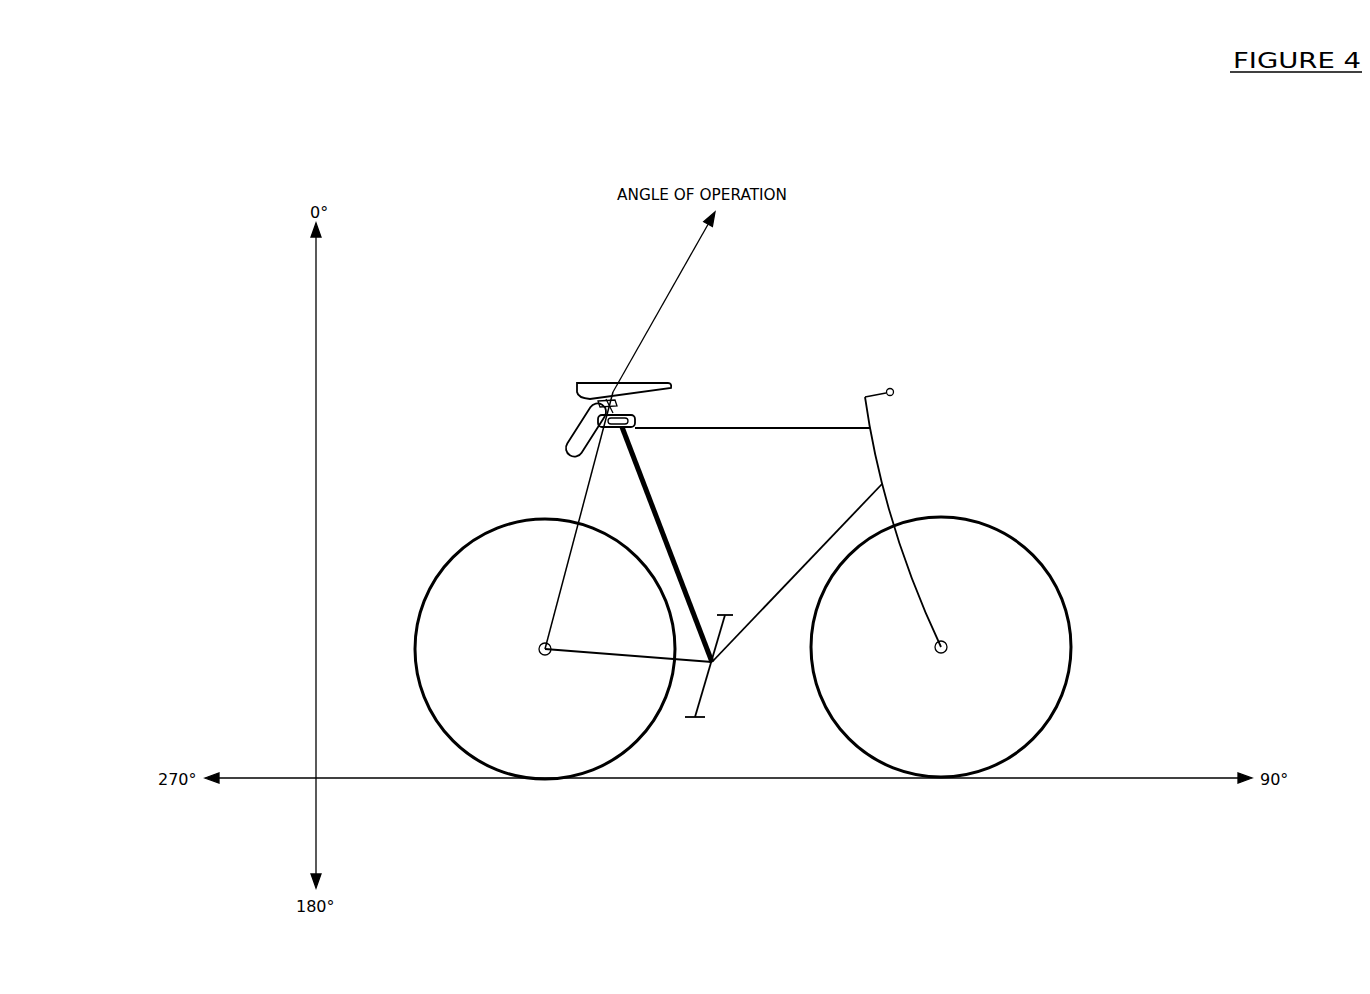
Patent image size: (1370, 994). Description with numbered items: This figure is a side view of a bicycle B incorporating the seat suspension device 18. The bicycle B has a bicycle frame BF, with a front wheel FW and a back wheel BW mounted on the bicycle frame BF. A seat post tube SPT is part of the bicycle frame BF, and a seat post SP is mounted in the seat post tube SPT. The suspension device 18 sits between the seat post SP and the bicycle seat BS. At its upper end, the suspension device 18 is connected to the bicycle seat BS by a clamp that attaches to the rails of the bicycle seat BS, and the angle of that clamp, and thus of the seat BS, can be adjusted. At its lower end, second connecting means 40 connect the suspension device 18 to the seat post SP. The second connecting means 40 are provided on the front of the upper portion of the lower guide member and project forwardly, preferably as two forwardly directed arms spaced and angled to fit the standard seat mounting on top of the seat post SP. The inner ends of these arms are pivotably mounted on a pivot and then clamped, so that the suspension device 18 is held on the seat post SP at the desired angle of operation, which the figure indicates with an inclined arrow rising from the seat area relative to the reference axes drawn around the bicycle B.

The bicycle B is at (981, 395).
The back wheel BW is at (441, 551).
The front wheel FW is at (1024, 526).
The bicycle frame BF is at (733, 440).
The seat post tube SPT is at (675, 515).
The bicycle seat BS is at (583, 370).
The seat post SP is at (634, 407).
The suspension device 18 is at (569, 420).
The second connecting means 40 is at (604, 442).